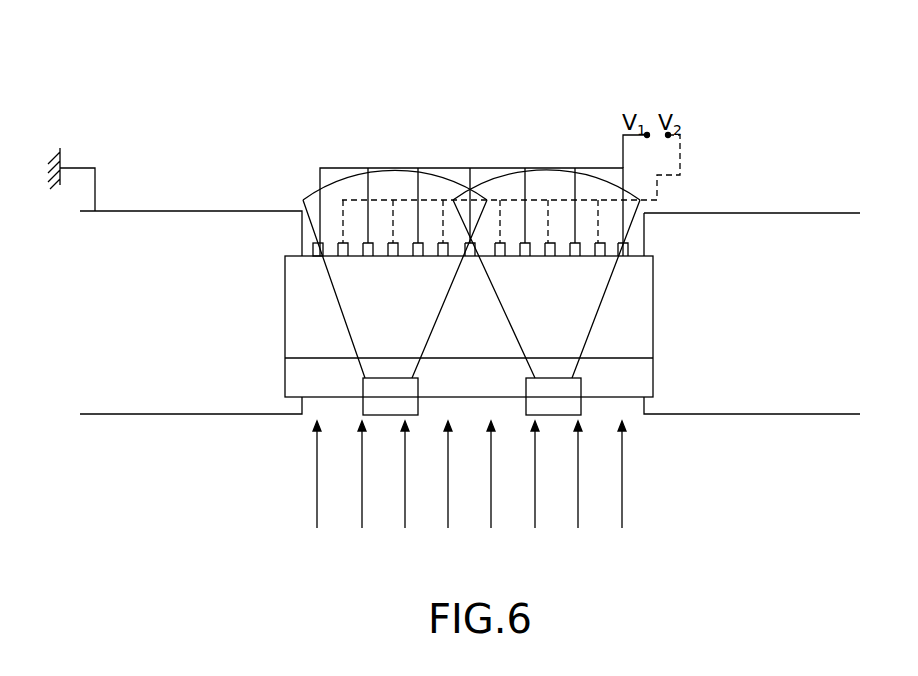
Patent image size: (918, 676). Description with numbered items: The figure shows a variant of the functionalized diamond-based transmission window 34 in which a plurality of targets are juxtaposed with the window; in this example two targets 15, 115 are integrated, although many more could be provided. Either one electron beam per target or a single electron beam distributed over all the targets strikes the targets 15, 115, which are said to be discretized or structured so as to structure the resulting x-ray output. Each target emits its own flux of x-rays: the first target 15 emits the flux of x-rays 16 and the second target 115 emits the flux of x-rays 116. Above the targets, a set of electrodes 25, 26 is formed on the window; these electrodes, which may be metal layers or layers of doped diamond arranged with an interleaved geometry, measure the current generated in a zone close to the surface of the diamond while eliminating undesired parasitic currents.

The target 15 is at (375, 398).
The target 115 is at (547, 398).
The flux of x-rays 16 is at (437, 173).
The flux of x-rays 116 is at (592, 172).
The electrode 25 is at (335, 247).
The electrode 26 is at (308, 252).
The functionalized diamond-based transmission window 34 is at (673, 232).